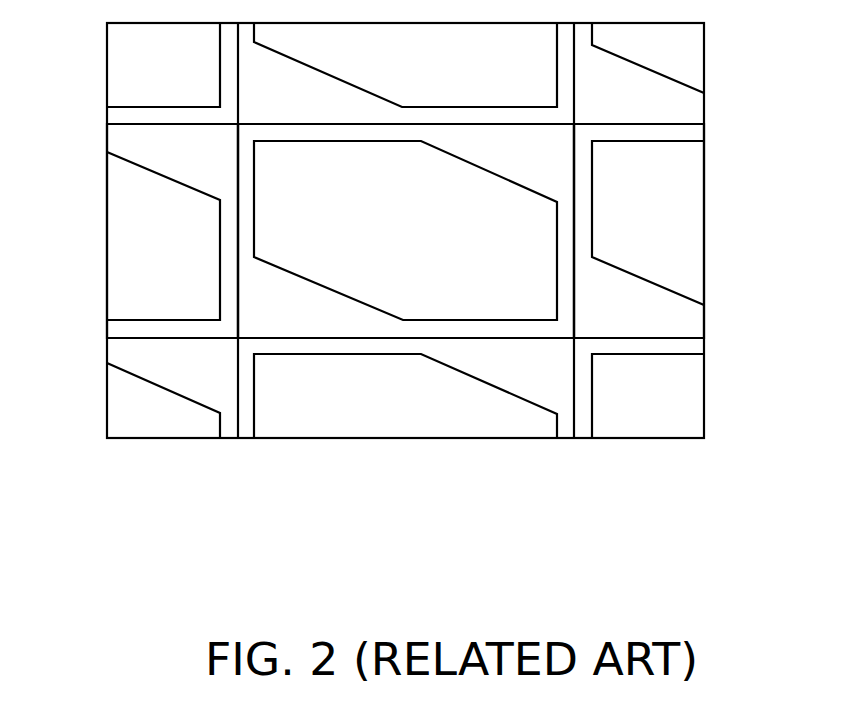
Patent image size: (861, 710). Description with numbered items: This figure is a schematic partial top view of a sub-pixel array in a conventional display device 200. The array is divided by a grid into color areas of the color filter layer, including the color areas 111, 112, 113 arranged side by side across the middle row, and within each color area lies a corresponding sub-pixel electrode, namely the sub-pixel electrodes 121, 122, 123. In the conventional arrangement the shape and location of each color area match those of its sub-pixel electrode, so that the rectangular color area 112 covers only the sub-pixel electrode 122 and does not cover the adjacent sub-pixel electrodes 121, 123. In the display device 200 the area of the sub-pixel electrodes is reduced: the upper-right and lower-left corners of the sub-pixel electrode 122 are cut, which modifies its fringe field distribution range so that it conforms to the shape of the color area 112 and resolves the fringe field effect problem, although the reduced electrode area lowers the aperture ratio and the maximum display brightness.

The display device 200 is at (663, 463).
The color area 111 is at (182, 167).
The color area 112 is at (542, 160).
The color area 113 is at (667, 319).
The sub-pixel electrode 121 is at (143, 268).
The sub-pixel electrode 122 is at (522, 222).
The sub-pixel electrode 123 is at (675, 258).